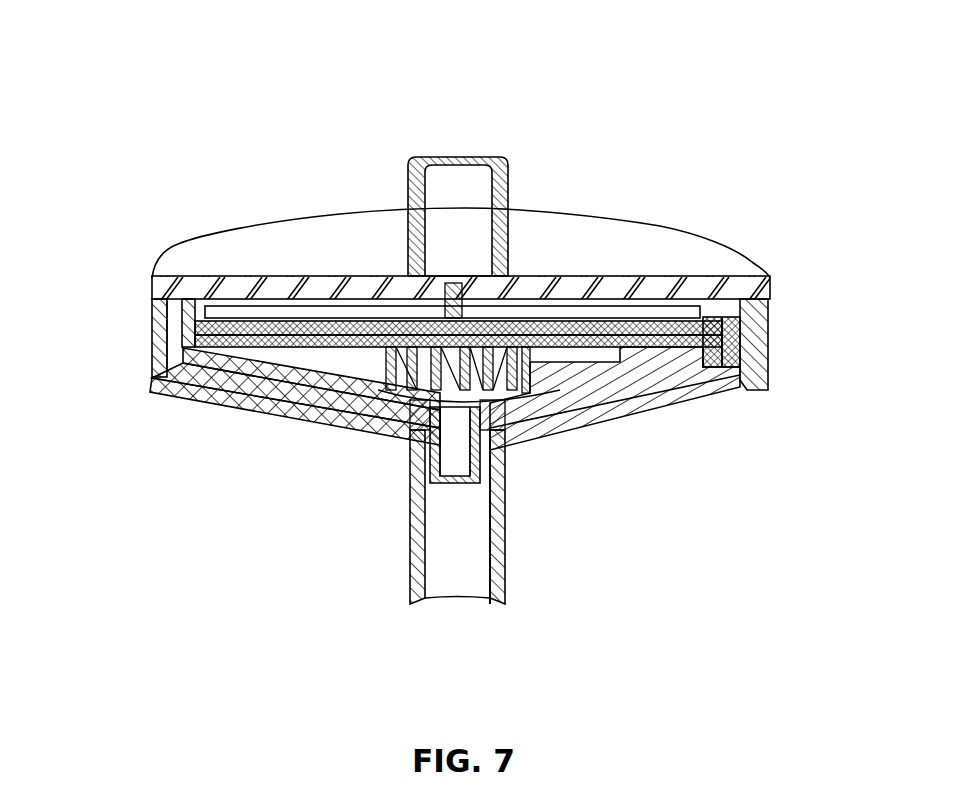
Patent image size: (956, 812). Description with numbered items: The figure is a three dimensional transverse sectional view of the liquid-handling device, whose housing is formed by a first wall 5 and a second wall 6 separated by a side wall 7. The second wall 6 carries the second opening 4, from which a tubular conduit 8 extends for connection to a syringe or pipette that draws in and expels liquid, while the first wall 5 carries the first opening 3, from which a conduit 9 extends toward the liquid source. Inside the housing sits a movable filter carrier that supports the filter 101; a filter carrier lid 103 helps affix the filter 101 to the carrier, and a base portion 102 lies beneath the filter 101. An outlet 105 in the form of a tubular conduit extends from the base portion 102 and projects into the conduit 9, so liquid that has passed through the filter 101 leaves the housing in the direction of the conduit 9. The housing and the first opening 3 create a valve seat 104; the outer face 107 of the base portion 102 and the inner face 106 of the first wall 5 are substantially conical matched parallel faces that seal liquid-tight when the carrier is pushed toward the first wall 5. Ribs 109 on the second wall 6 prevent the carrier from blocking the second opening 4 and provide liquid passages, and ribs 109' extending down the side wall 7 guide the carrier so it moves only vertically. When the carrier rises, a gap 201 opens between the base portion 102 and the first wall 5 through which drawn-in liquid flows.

The first opening 3 is at (472, 434).
The second opening 4 is at (455, 298).
The first wall 5 is at (643, 413).
The second wall 6 is at (655, 248).
The side wall 7 is at (770, 337).
The conduit 8 is at (408, 190).
The conduit 9 is at (505, 557).
The filter 101 is at (553, 322).
The base portion 102 is at (202, 365).
The filter carrier lid 103 is at (716, 322).
The valve seat 104 is at (425, 435).
The outlet 105 is at (482, 465).
The inner face 106 is at (333, 412).
The outer face 107 is at (293, 392).
The ribs 109 is at (442, 210).
The ribs 109' is at (367, 330).
The gap 201 is at (232, 380).